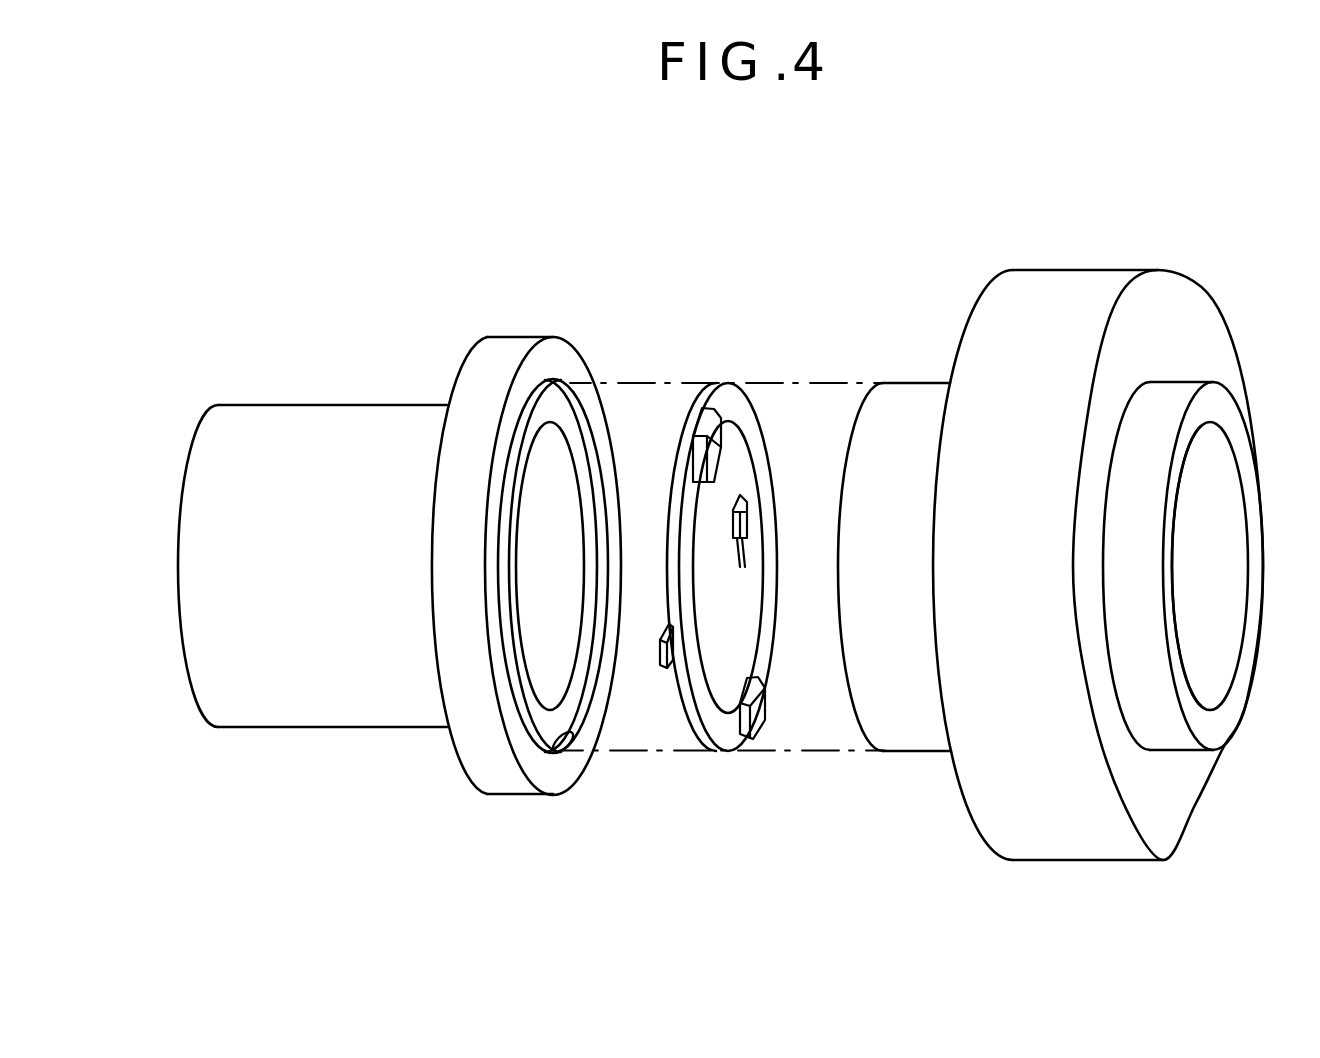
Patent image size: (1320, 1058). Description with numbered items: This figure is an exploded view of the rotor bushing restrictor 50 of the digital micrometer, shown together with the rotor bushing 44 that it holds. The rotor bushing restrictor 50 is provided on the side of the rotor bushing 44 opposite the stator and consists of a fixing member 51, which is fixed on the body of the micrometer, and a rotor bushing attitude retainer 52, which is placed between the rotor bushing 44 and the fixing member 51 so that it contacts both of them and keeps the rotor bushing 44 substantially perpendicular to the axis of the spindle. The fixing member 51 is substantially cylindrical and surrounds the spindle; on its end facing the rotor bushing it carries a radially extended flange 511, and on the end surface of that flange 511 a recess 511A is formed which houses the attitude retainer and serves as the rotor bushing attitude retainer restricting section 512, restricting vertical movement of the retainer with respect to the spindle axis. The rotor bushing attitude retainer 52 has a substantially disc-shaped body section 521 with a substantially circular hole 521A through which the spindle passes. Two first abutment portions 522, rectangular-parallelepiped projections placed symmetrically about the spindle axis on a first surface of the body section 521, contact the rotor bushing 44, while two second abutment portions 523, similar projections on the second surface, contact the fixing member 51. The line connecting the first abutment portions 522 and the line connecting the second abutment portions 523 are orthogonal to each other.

The rotor bushing 44 is at (1076, 270).
The rotor bushing restrictor 50 is at (705, 231).
The fixing member 51 is at (355, 405).
The flange 511 is at (512, 785).
The recess 511A is at (597, 601).
The rotor bushing attitude retainer restricting section 512 is at (573, 733).
The rotor bushing attitude retainer 52 is at (727, 384).
The body section 521 is at (737, 398).
The hole 521A is at (740, 445).
The first abutment portions 522 is at (718, 410).
The second abutment portions 523 is at (745, 562).